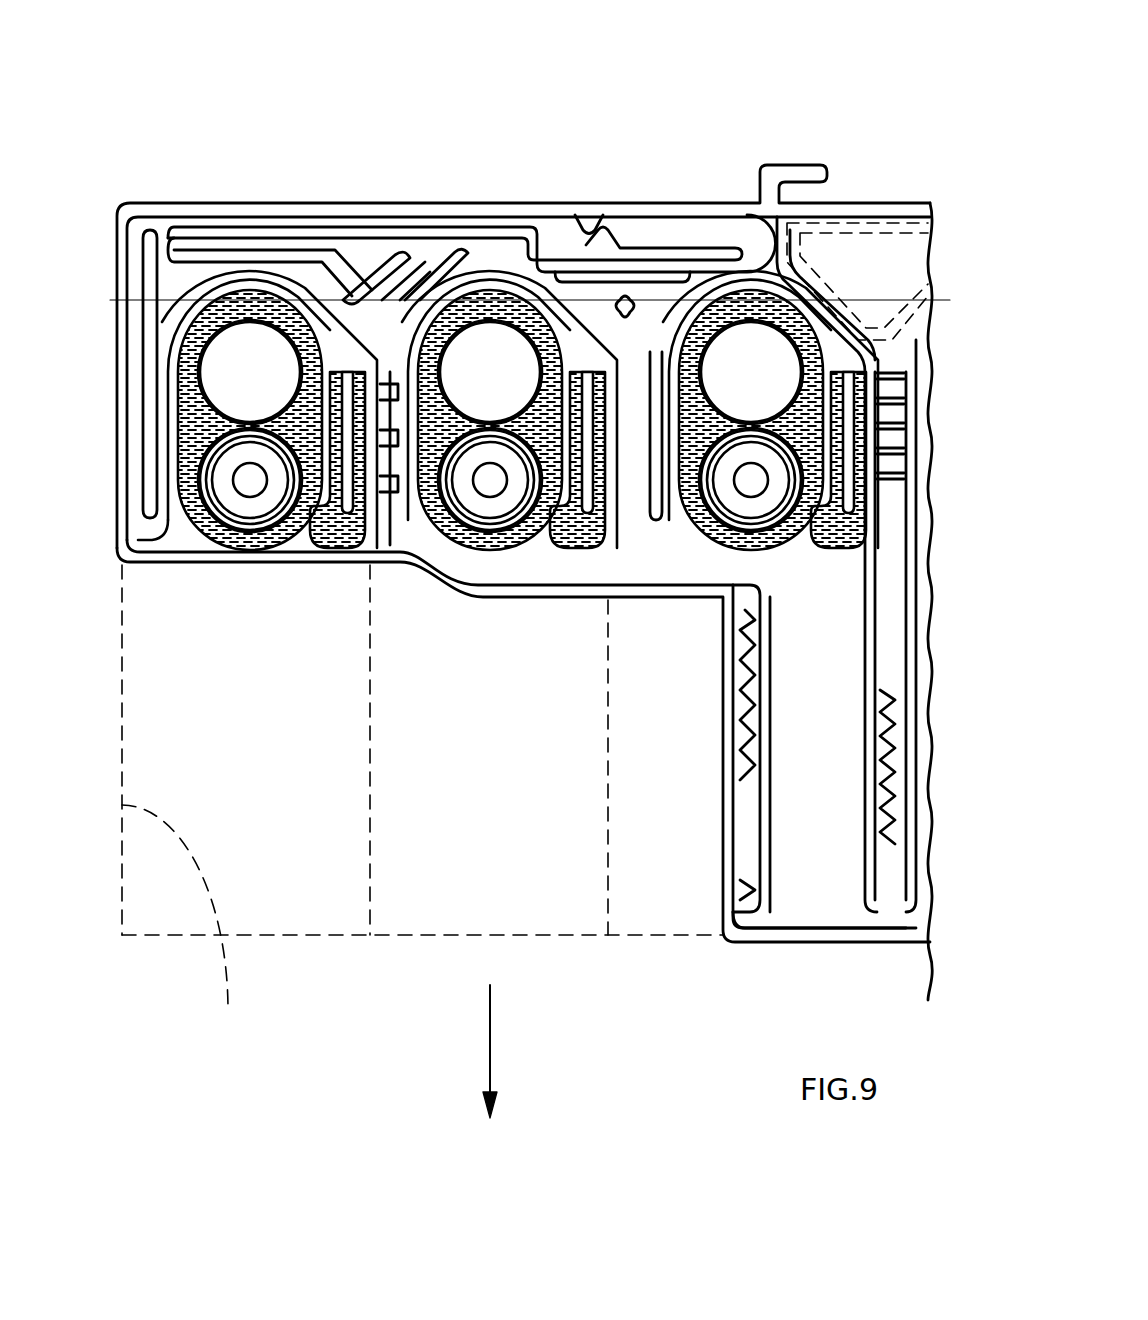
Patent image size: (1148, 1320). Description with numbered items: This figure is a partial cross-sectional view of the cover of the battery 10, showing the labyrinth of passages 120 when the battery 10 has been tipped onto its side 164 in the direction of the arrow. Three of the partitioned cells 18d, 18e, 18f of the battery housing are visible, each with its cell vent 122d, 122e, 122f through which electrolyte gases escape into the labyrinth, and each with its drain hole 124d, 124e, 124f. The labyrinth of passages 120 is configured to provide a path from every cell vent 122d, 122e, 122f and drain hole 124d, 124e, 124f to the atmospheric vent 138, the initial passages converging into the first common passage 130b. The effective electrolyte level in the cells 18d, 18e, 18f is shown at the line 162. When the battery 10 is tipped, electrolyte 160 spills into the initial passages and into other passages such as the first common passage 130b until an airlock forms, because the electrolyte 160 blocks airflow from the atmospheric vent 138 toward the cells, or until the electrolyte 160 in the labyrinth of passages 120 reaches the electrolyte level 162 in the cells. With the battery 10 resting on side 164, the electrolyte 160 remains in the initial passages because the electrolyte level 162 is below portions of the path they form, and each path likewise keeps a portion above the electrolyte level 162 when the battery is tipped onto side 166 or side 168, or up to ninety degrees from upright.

The battery 10 is at (427, 78).
The cell 18d is at (734, 236).
The cell 18e is at (473, 217).
The cell 18f is at (233, 231).
The labyrinth of passages 120 is at (670, 186).
The cell vent 122d is at (713, 517).
The cell vent 122e is at (471, 488).
The cell vent 122f is at (229, 477).
The drain hole 124d is at (730, 540).
The drain hole 124e is at (490, 561).
The drain hole 124f is at (251, 547).
The first common passage 130b is at (322, 260).
The atmospheric vent 138 is at (852, 233).
The electrolyte 160 is at (348, 540).
The electrolyte level 162 is at (944, 298).
The side 164 is at (652, 940).
The side 166 is at (182, 925).
The side 168 is at (410, 205).